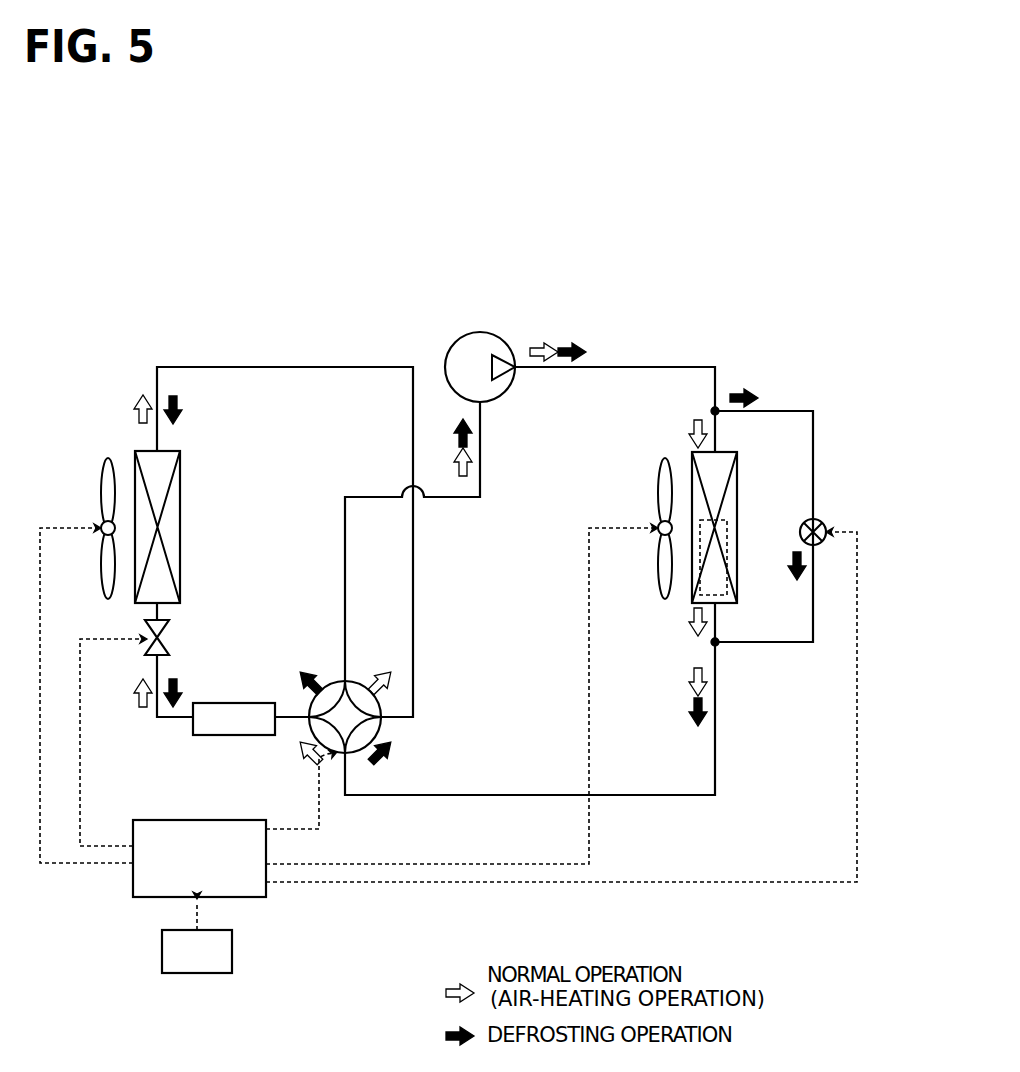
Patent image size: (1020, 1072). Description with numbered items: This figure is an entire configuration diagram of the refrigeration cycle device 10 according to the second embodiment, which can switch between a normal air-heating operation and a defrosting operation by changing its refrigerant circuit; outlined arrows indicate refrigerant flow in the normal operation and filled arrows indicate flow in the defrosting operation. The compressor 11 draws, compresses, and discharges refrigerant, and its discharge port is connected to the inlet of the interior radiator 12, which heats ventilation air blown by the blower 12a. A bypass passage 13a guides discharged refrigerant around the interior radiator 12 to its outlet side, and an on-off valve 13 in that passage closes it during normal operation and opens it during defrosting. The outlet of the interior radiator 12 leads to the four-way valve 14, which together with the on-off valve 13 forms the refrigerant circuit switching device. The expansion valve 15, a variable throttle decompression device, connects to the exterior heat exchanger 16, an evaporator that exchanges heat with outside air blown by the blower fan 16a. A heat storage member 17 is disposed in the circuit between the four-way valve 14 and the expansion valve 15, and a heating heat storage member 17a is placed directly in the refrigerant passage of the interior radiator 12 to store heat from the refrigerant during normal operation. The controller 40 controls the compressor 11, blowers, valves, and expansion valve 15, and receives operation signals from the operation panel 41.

The refrigeration cycle device 10 is at (688, 323).
The compressor 11 is at (503, 340).
The interior radiator 12 is at (738, 478).
The blower 12a is at (661, 588).
The on-off valve 13 is at (822, 522).
The bypass passage 13a is at (795, 410).
The four-way valve 14 is at (349, 754).
The expansion valve 15 is at (153, 655).
The exterior heat exchanger 16 is at (181, 478).
The blower fan 16a is at (101, 588).
The heat storage member 17 is at (236, 703).
The heating heat storage member 17a is at (727, 568).
The controller 40 is at (197, 820).
The operation panel 41 is at (233, 944).